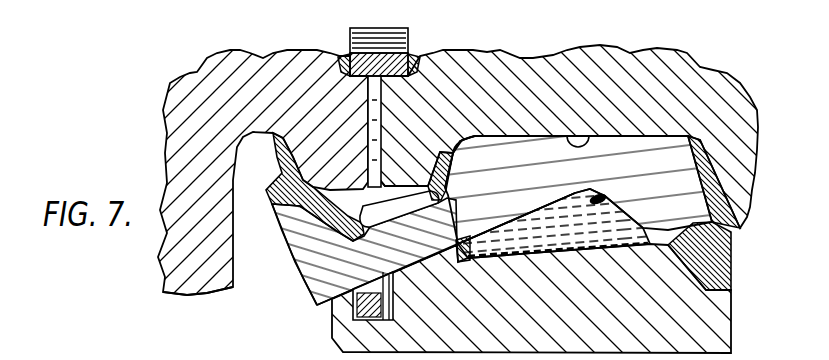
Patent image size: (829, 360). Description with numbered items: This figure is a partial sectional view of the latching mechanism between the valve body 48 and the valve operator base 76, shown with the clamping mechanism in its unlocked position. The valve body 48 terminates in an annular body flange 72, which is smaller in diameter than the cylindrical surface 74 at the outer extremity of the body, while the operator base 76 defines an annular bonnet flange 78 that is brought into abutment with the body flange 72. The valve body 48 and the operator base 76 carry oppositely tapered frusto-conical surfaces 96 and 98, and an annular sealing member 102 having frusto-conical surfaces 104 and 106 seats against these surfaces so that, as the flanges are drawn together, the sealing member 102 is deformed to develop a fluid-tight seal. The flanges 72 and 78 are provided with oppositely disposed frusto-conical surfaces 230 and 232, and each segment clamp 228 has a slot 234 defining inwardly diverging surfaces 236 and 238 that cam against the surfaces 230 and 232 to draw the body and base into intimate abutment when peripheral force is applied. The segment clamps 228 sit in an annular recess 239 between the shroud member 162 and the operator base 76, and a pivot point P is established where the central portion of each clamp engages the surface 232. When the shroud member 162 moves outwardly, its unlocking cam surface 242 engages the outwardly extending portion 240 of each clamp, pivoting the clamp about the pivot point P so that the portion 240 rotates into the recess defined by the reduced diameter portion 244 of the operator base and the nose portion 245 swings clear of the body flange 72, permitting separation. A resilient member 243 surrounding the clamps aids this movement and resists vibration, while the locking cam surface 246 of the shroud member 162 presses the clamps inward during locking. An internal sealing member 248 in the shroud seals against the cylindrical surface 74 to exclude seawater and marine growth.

The valve body 48 is at (253, 170).
The annular body flange 72 is at (323, 176).
The cylindrical surface 74 is at (186, 294).
The valve operator base 76 is at (641, 125).
The annular bonnet flange 78 is at (392, 180).
The frusto-conical surface 96 is at (347, 54).
The frusto-conical surface 98 is at (416, 63).
The annular sealing member 102 is at (383, 65).
The frusto-conical surface 104 is at (350, 75).
The frusto-conical surface 106 is at (408, 74).
The shroud member 162 is at (710, 328).
The segment clamps 228 is at (627, 179).
The frusto-conical surface 230 is at (266, 189).
The frusto-conical surface 232 is at (455, 172).
The slot 234 is at (380, 208).
The inwardly diverging surface 236 is at (345, 220).
The inwardly diverging surface 238 is at (460, 192).
The annular recess 239 is at (552, 233).
The outwardly extending portion 240 is at (690, 207).
The unlocking cam surface 242 is at (731, 263).
The resilient member 243 is at (612, 202).
The reduced diameter portion 244 is at (570, 140).
The nose portion 245 is at (270, 201).
The locking cam surface 246 is at (573, 245).
The internal sealing member 248 is at (357, 300).
The pivot point P is at (457, 153).